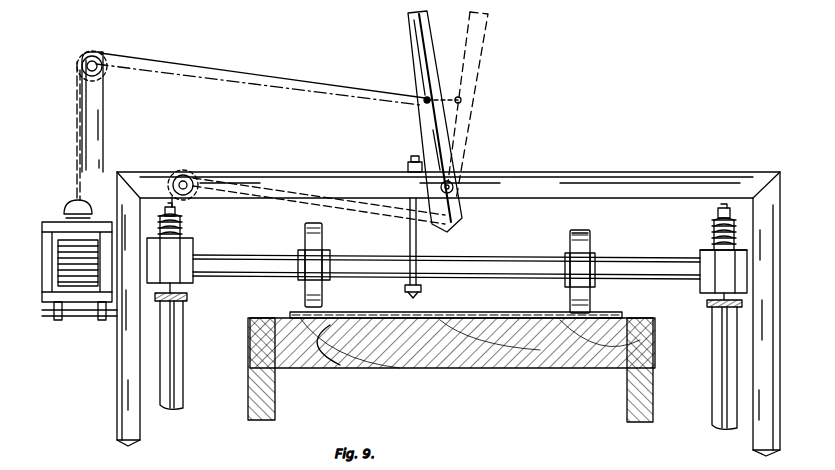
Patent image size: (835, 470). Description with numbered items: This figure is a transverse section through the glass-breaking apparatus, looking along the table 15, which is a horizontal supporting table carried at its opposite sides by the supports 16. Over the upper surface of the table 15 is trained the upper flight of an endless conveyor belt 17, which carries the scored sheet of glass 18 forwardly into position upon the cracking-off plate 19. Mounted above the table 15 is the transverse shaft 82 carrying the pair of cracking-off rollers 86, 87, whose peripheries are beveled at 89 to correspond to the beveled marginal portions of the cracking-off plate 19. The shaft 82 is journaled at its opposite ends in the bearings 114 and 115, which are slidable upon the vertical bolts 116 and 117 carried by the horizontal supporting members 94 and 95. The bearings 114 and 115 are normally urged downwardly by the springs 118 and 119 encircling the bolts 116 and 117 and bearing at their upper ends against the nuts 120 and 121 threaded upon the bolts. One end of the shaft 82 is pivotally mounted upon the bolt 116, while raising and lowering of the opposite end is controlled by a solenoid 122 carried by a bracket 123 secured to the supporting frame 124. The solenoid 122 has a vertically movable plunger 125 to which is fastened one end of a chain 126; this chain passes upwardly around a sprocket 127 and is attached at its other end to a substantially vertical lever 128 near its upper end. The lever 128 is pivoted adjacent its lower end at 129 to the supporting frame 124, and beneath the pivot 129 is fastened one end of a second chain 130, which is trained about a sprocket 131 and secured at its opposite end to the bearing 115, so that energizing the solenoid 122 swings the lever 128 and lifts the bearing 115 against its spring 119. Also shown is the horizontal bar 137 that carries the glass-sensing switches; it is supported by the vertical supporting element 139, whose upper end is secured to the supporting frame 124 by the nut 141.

The supporting table 15 is at (392, 360).
The supports 16 is at (272, 392).
The endless conveyor belt 17 is at (606, 312).
The scored sheet of glass 18 is at (488, 310).
The cracking-off plate 19 is at (338, 345).
The transverse shaft 82 is at (490, 262).
The cracking-off roller 86 is at (592, 246).
The cracking-off roller 87 is at (304, 240).
The beveled periphery 89 is at (578, 228).
The horizontal supporting member 94 is at (707, 303).
The horizontal supporting member 95 is at (186, 305).
The bearing 114 is at (716, 283).
The bearing 115 is at (193, 275).
The vertical bolt 116 is at (710, 228).
The vertical bolt 117 is at (188, 294).
The spring 118 is at (736, 225).
The spring 119 is at (184, 232).
The nut 120 is at (716, 210).
The nut 121 is at (178, 210).
The solenoid 122 is at (68, 258).
The bracket 123 is at (88, 316).
The supporting frame 124 is at (316, 178).
The plunger 125 is at (68, 210).
The chain 126 is at (76, 124).
The sprocket 127 is at (104, 70).
The lever 128 is at (432, 46).
The pivot 129 is at (455, 184).
The chain 130 is at (345, 205).
The sprocket 131 is at (215, 172).
The horizontal bar 137 is at (404, 287).
The vertical supporting element 139 is at (418, 240).
The nut 141 is at (406, 166).